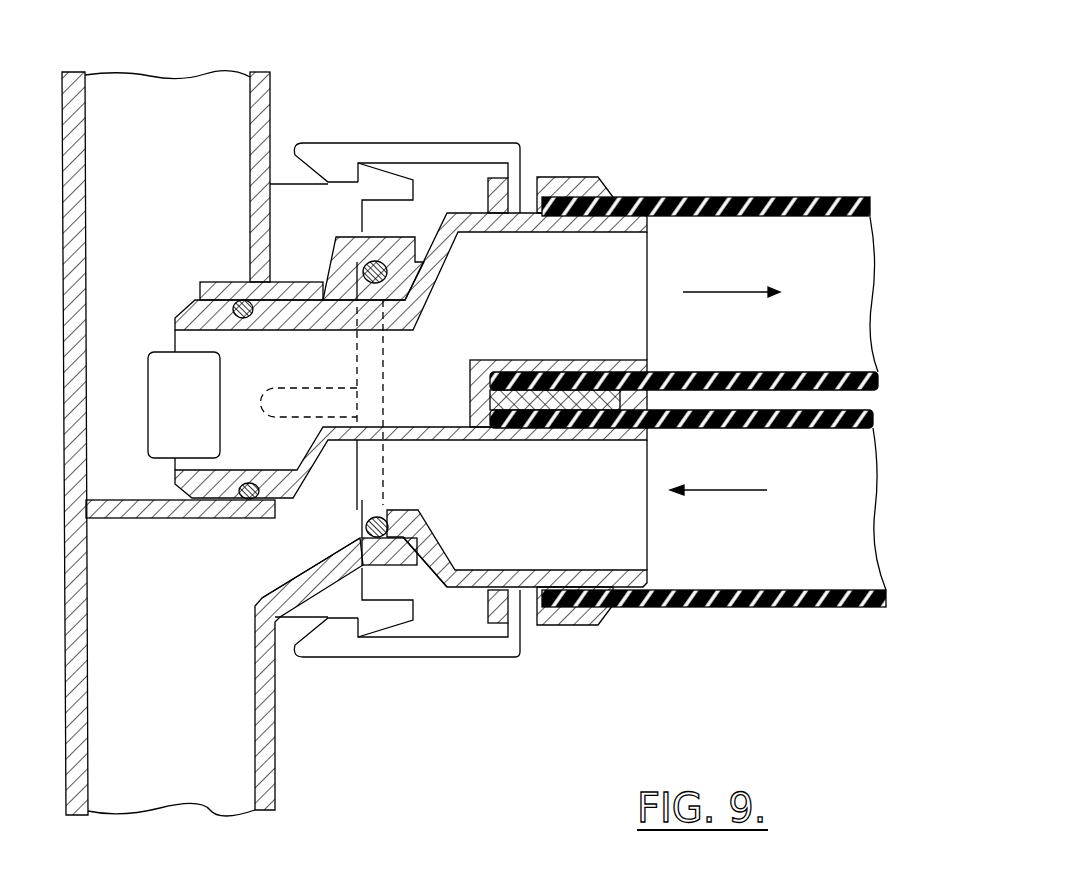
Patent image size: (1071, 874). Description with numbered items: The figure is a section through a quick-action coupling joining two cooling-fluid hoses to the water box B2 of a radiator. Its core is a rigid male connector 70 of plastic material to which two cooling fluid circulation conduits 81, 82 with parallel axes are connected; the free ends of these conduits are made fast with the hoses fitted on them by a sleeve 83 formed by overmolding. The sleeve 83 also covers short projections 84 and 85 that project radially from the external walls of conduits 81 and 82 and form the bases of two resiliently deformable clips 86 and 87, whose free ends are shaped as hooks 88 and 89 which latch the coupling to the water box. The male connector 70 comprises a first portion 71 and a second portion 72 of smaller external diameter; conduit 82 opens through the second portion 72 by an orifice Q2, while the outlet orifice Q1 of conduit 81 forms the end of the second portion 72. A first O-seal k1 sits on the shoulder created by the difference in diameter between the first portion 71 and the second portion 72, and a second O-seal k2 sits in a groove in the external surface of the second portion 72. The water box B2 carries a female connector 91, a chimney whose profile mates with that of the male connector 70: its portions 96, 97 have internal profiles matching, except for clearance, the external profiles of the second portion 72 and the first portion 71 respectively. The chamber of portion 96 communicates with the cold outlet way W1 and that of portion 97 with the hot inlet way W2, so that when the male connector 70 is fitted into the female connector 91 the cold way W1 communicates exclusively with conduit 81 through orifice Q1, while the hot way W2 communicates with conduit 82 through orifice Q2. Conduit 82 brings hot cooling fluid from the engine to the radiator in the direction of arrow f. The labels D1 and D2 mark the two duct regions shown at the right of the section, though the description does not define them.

The cold outlet way W1 is at (175, 108).
The hot inlet way W2 is at (258, 758).
The water box B2 is at (88, 337).
The O-seal k1 is at (378, 262).
The O-seal k2 is at (240, 300).
The outlet orifice Q1 is at (172, 462).
The orifice Q2 is at (358, 492).
The first duct D1 is at (795, 225).
The second duct D2 is at (840, 568).
The arrow f is at (725, 391).
The rigid male connector 70 is at (423, 724).
The first portion 71 is at (410, 530).
The second portion 72 is at (305, 585).
The cooling fluid circulation conduit 81 is at (614, 232).
The cooling fluid circulation conduit 82 is at (648, 607).
The sleeve 83 is at (560, 185).
The short projection 84 is at (508, 197).
The short projection 85 is at (525, 592).
The resiliently deformable clip 86 is at (470, 160).
The resiliently deformable clip 87 is at (495, 657).
The hook 88 is at (338, 148).
The hook 89 is at (275, 503).
The female connector 91 is at (262, 588).
The portion 96 is at (377, 180).
The portion 97 is at (372, 612).